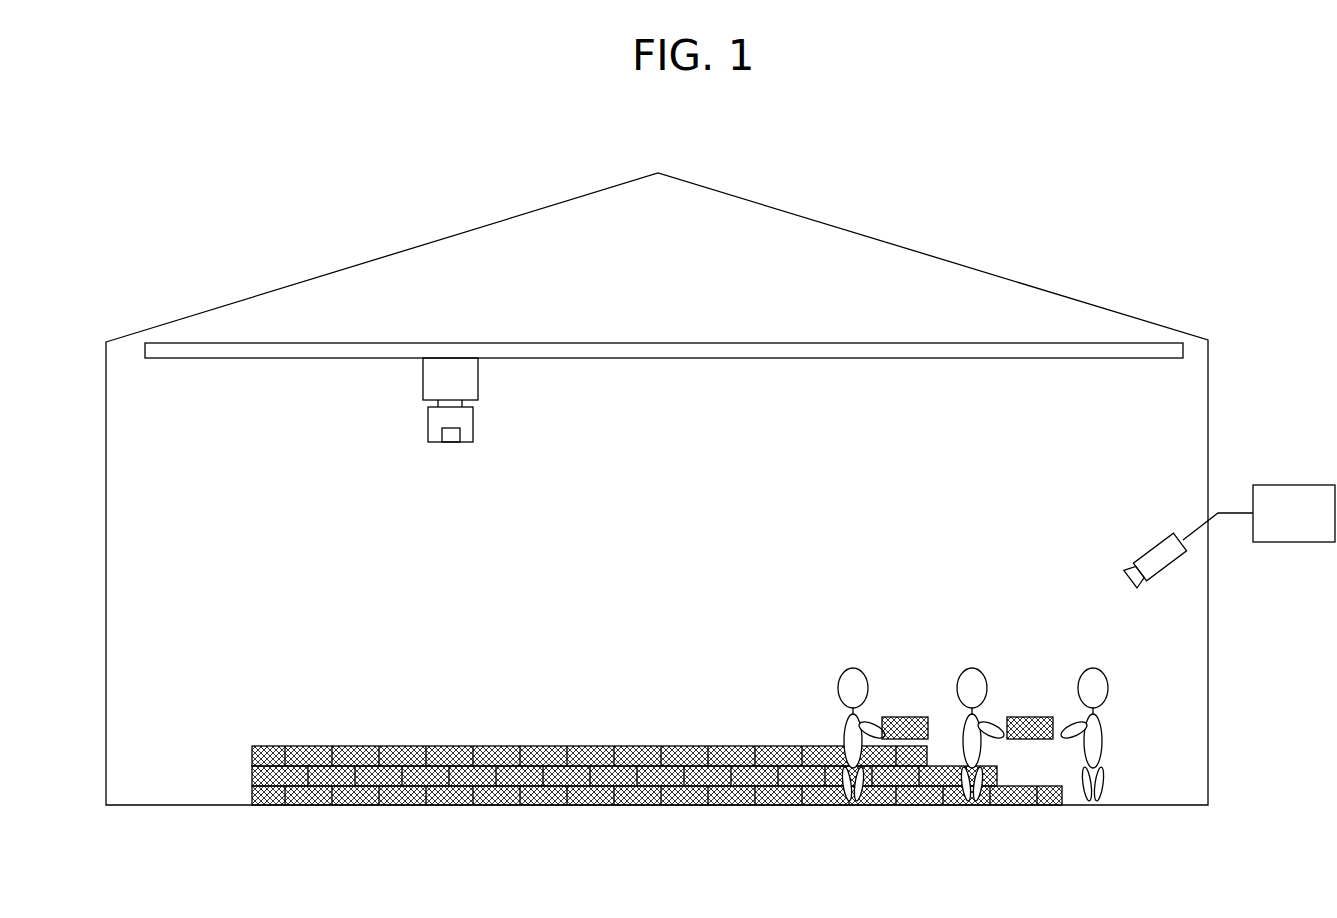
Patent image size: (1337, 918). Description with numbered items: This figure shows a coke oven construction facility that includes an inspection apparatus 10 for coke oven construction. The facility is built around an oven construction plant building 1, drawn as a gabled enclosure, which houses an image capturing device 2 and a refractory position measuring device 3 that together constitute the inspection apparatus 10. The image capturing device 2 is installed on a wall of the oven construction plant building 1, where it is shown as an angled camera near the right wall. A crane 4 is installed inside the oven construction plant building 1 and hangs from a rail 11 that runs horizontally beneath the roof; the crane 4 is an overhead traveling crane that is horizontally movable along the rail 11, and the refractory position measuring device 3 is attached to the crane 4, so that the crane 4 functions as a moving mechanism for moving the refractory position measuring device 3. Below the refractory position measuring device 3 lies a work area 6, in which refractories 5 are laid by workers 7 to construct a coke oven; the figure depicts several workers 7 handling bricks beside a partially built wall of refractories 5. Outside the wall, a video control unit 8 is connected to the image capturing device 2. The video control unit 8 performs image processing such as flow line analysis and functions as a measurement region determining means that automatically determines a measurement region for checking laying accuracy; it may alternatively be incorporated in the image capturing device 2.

The oven construction plant building 1 is at (1208, 362).
The image capturing device 2 is at (1178, 562).
The refractory position measuring device 3 is at (473, 420).
The crane 4 is at (478, 377).
The refractories 5 is at (540, 745).
The work area 6 is at (1027, 392).
The workers 7 is at (972, 676).
The video control unit 8 is at (1310, 484).
The inspection apparatus 10 is at (822, 296).
The rail 11 is at (380, 343).